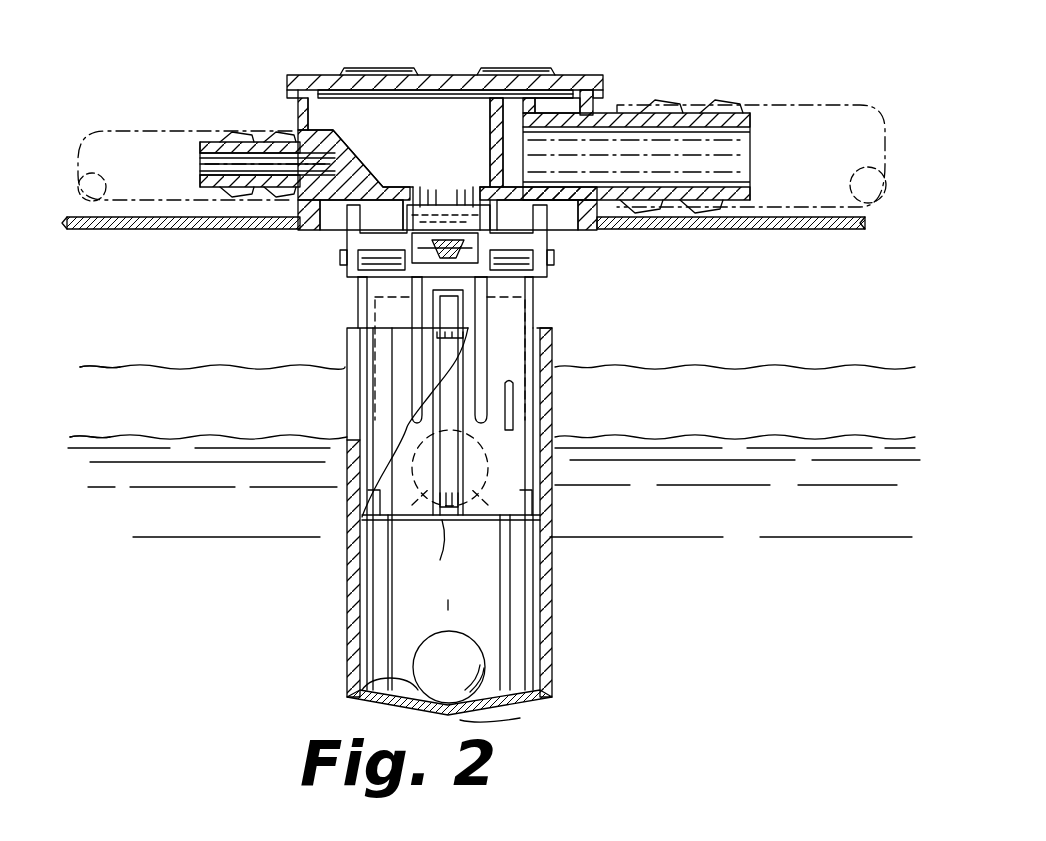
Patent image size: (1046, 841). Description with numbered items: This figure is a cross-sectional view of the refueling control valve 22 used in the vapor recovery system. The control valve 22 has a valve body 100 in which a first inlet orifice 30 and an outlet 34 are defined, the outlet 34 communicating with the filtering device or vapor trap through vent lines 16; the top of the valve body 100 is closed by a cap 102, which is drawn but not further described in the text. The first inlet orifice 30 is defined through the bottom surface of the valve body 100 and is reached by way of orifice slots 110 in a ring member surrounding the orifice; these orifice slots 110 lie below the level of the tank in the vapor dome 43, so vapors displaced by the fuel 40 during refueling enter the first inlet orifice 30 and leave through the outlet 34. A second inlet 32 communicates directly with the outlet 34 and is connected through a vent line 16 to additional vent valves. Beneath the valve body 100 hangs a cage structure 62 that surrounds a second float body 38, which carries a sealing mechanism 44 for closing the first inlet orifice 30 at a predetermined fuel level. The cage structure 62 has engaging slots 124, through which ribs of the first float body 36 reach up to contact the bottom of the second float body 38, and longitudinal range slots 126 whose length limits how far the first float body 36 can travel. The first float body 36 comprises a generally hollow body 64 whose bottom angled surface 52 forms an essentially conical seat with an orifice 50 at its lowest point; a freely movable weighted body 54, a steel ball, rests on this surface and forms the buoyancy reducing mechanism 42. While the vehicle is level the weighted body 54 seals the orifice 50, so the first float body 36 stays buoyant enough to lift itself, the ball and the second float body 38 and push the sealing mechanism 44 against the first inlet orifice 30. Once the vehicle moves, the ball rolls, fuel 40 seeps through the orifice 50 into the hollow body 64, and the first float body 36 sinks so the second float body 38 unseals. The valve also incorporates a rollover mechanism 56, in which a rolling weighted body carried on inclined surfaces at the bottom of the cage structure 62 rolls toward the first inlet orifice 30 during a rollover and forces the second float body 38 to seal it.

The vent line 16 is at (125, 120).
The control valve 22 is at (410, 131).
The first inlet orifice 30 is at (437, 165).
The second inlet 32 is at (220, 145).
The outlet 34 is at (750, 135).
The first float body 36 is at (430, 525).
The second float body 38 is at (540, 328).
The fuel 40 is at (773, 392).
The buoyancy reducing mechanism 42 is at (95, 367).
The vapor dome 43 is at (170, 278).
The sealing mechanism 44 is at (318, 282).
The orifice 50 is at (470, 717).
The bottom angled surface 52 is at (362, 681).
The freely movable weighted body 54 is at (455, 655).
The rollover mechanism 56 is at (445, 522).
The cage structure 62 is at (540, 375).
The hollow body 64 is at (552, 540).
The valve body 100 is at (440, 108).
The cap 102 is at (575, 74).
The orifice slots 110 is at (472, 226).
The engaging slots 124 is at (512, 492).
The longitudinal range slots 126 is at (450, 313).